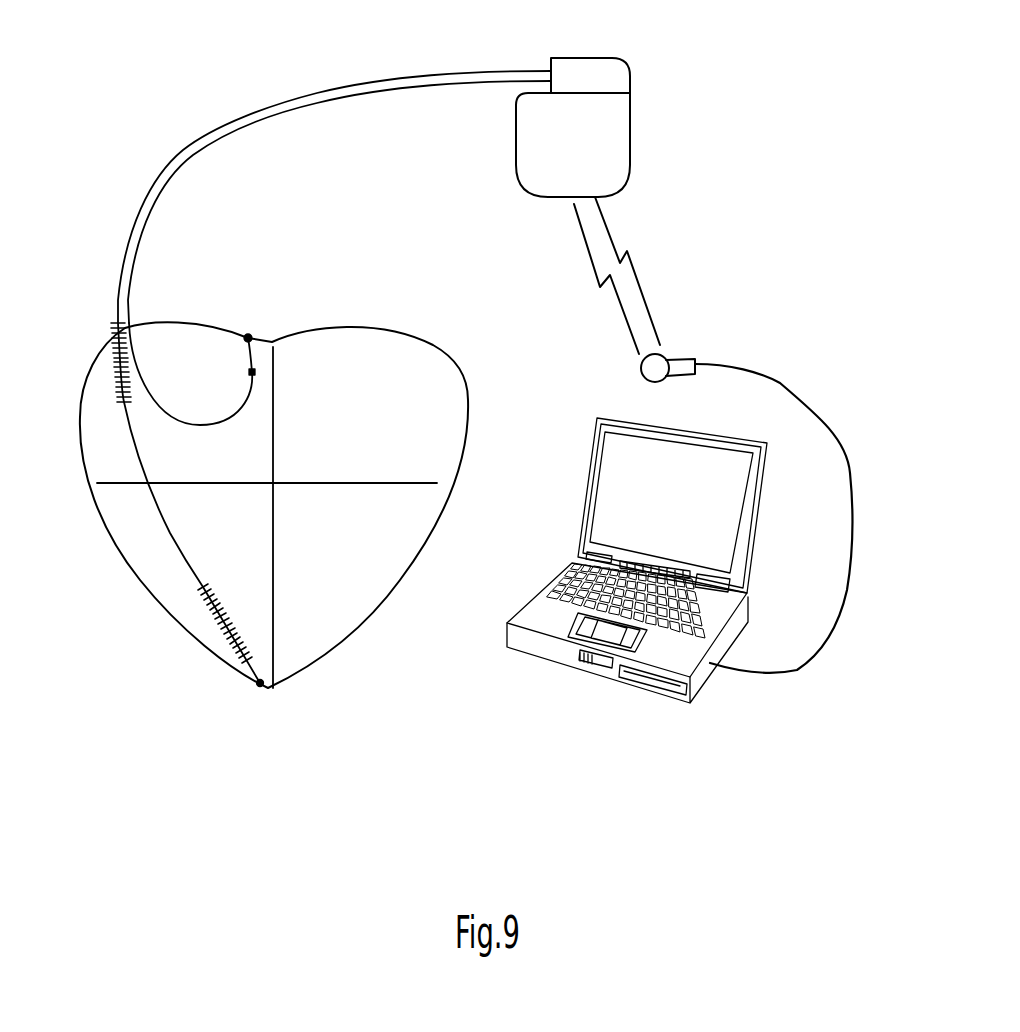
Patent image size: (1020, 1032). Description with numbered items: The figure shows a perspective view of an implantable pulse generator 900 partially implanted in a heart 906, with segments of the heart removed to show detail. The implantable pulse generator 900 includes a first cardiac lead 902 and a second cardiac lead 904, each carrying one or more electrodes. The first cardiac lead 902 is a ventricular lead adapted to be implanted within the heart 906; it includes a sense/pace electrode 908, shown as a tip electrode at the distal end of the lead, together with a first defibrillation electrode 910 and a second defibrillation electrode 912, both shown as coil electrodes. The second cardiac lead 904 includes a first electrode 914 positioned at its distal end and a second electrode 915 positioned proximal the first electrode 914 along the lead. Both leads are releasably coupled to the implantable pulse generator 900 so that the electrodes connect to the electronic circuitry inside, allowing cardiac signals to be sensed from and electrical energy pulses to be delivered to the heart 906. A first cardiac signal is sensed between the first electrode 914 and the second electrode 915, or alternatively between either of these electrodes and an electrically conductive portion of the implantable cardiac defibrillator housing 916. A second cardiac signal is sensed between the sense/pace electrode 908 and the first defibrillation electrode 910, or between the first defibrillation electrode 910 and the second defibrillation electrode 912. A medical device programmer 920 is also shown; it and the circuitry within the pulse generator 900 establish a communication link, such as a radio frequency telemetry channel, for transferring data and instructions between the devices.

The implantable pulse generator 900 is at (614, 73).
The first cardiac lead 902 is at (240, 111).
The second cardiac lead 904 is at (325, 101).
The heart 906 is at (461, 368).
The sense/pace electrode 908 is at (257, 688).
The first defibrillation electrode 910 is at (223, 627).
The second defibrillation electrode 912 is at (112, 345).
The first electrode 914 is at (250, 336).
The second electrode 915 is at (250, 372).
The implantable cardiac defibrillator housing 916 is at (626, 136).
The medical device programmer 920 is at (603, 672).